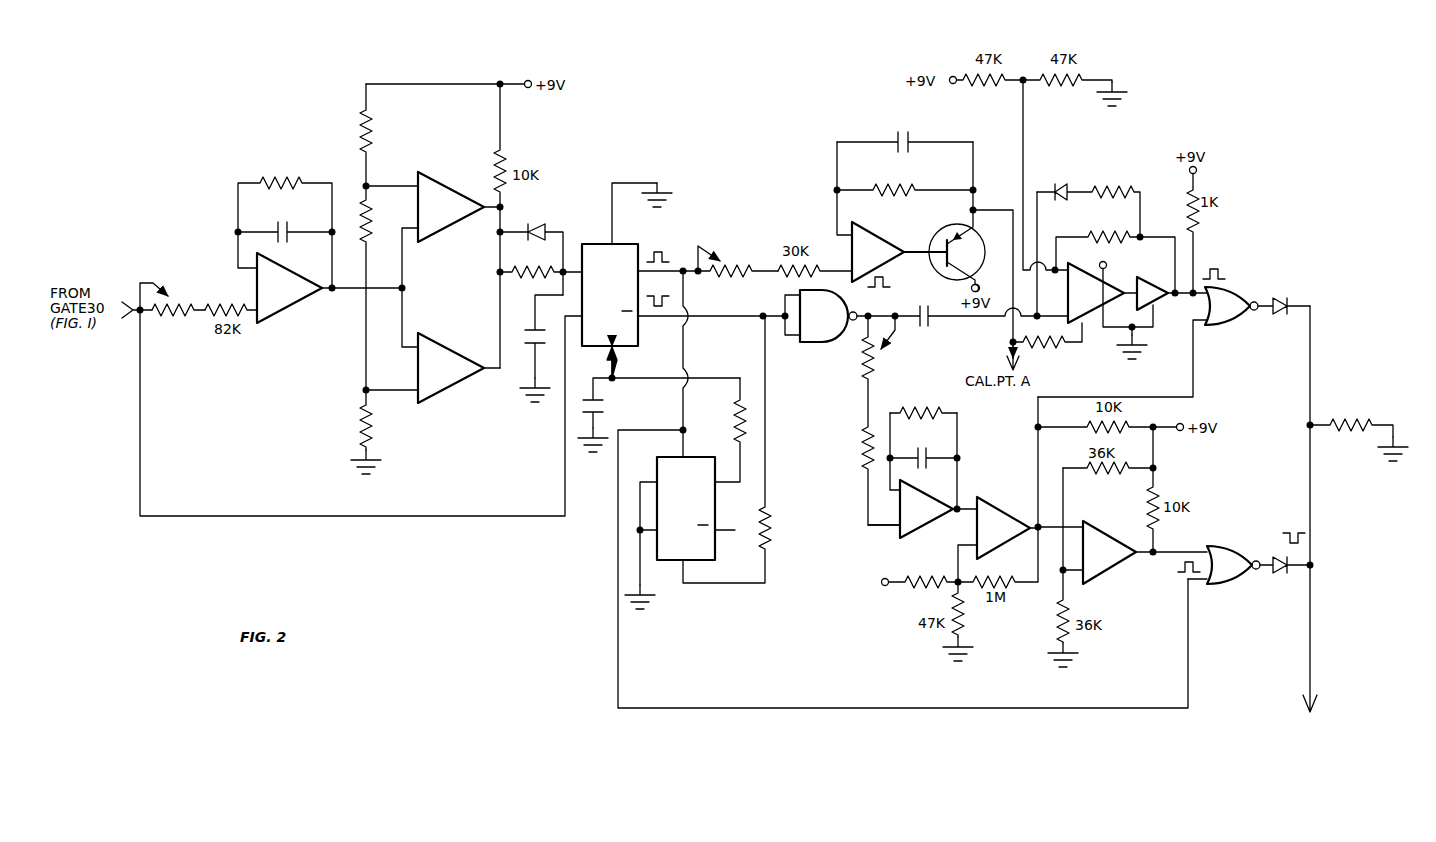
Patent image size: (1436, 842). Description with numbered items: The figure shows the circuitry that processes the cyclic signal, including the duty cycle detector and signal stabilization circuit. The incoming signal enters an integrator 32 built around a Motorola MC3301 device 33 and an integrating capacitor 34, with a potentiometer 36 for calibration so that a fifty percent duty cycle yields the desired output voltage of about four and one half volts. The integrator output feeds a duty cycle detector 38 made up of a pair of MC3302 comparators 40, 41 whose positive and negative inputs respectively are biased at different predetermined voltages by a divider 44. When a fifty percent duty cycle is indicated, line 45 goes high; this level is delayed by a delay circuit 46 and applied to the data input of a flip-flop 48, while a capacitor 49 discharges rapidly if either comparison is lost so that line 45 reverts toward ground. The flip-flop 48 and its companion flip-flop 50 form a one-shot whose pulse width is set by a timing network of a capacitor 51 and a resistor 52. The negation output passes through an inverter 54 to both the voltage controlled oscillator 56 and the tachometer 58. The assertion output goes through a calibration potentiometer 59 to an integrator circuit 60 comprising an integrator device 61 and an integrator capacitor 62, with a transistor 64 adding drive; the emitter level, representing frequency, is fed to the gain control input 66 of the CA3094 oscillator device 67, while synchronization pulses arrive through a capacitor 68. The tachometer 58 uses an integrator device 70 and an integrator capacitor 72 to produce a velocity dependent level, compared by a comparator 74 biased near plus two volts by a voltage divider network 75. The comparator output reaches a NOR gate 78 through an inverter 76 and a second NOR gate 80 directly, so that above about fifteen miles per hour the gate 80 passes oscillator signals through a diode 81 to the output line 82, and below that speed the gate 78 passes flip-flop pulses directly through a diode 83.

The integrator 32 is at (231, 256).
The integrator device 33 is at (284, 297).
The integrating capacitor 34 is at (291, 240).
The potentiometer 36 is at (187, 299).
The duty cycle detector 38 is at (453, 288).
The comparator 40 is at (451, 218).
The comparator 41 is at (445, 377).
The divider 44 is at (360, 166).
The output line 45 is at (497, 286).
The delay circuit 46 is at (543, 264).
The flip-flop 48 is at (614, 303).
The capacitor 49 is at (544, 360).
The companion flip-flop 50 is at (692, 517).
The capacitor 51 is at (604, 413).
The resistor 52 is at (734, 434).
The inverter 54 is at (829, 326).
The voltage controlled oscillator 56 is at (1145, 332).
The tachometer 58 is at (886, 489).
The calibration potentiometer 59 is at (746, 262).
The integrator circuit 60 is at (831, 214).
The integrator device 61 is at (876, 263).
The integrator capacitor 62 is at (913, 150).
The transistor 64 is at (986, 250).
The gain control input 66 is at (1086, 328).
The voltage controlled oscillator device 67 is at (1097, 304).
The capacitor 68 is at (937, 322).
The integrator device 70 is at (929, 522).
The integrator capacitor 72 is at (929, 466).
The comparator 74 is at (1006, 537).
The voltage divider network 75 is at (900, 594).
The inverter 76 is at (1113, 563).
The NOR gate 78 is at (1239, 576).
The NOR gate 80 is at (1237, 317).
The diode 81 is at (1279, 312).
The output line 82 is at (1312, 643).
The diode 83 is at (1283, 576).